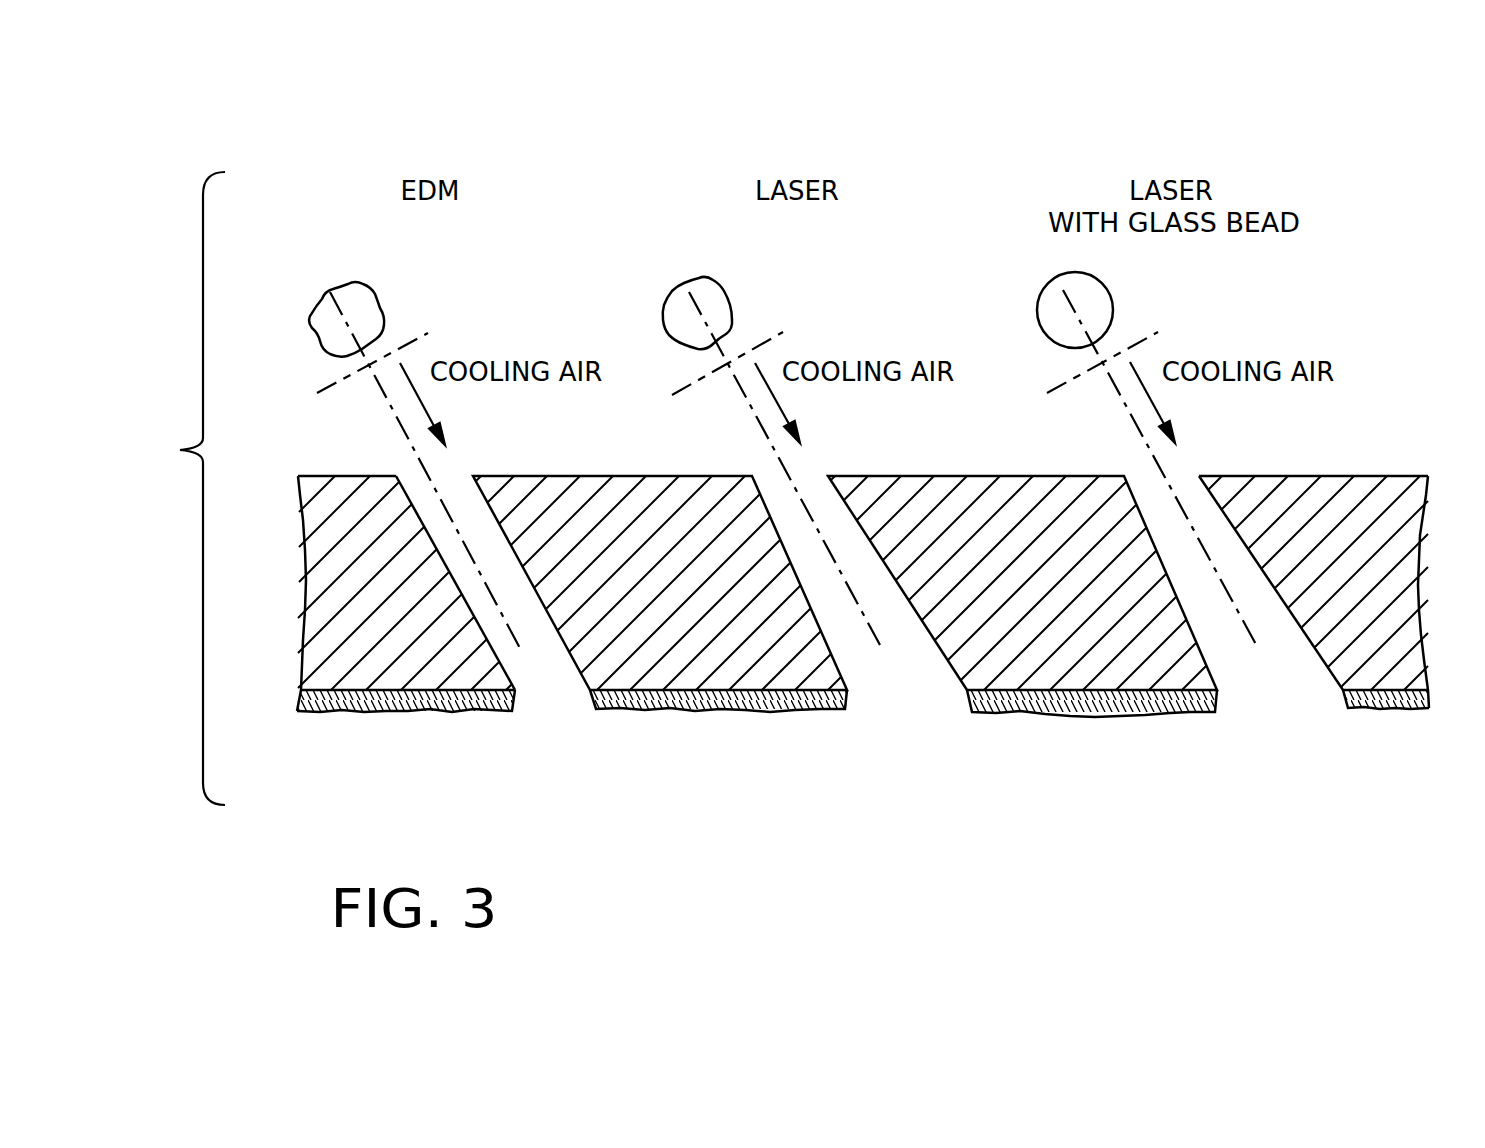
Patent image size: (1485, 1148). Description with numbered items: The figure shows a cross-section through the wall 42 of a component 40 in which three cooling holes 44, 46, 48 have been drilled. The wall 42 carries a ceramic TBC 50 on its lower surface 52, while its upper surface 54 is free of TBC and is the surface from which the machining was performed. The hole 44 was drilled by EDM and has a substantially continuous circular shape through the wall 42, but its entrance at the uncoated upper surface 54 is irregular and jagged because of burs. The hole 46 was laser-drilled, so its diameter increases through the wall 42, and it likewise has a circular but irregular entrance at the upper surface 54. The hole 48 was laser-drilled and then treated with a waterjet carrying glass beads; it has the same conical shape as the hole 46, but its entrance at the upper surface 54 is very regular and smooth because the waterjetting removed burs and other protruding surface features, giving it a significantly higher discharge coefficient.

The component 40 is at (298, 108).
The wall 42 is at (328, 607).
The cooling hole 44 is at (490, 512).
The cooling hole 46 is at (767, 507).
The cooling hole 48 is at (1143, 507).
The ceramic TBC 50 is at (1378, 710).
The lower surface 52 is at (360, 712).
The upper surface 54 is at (340, 476).